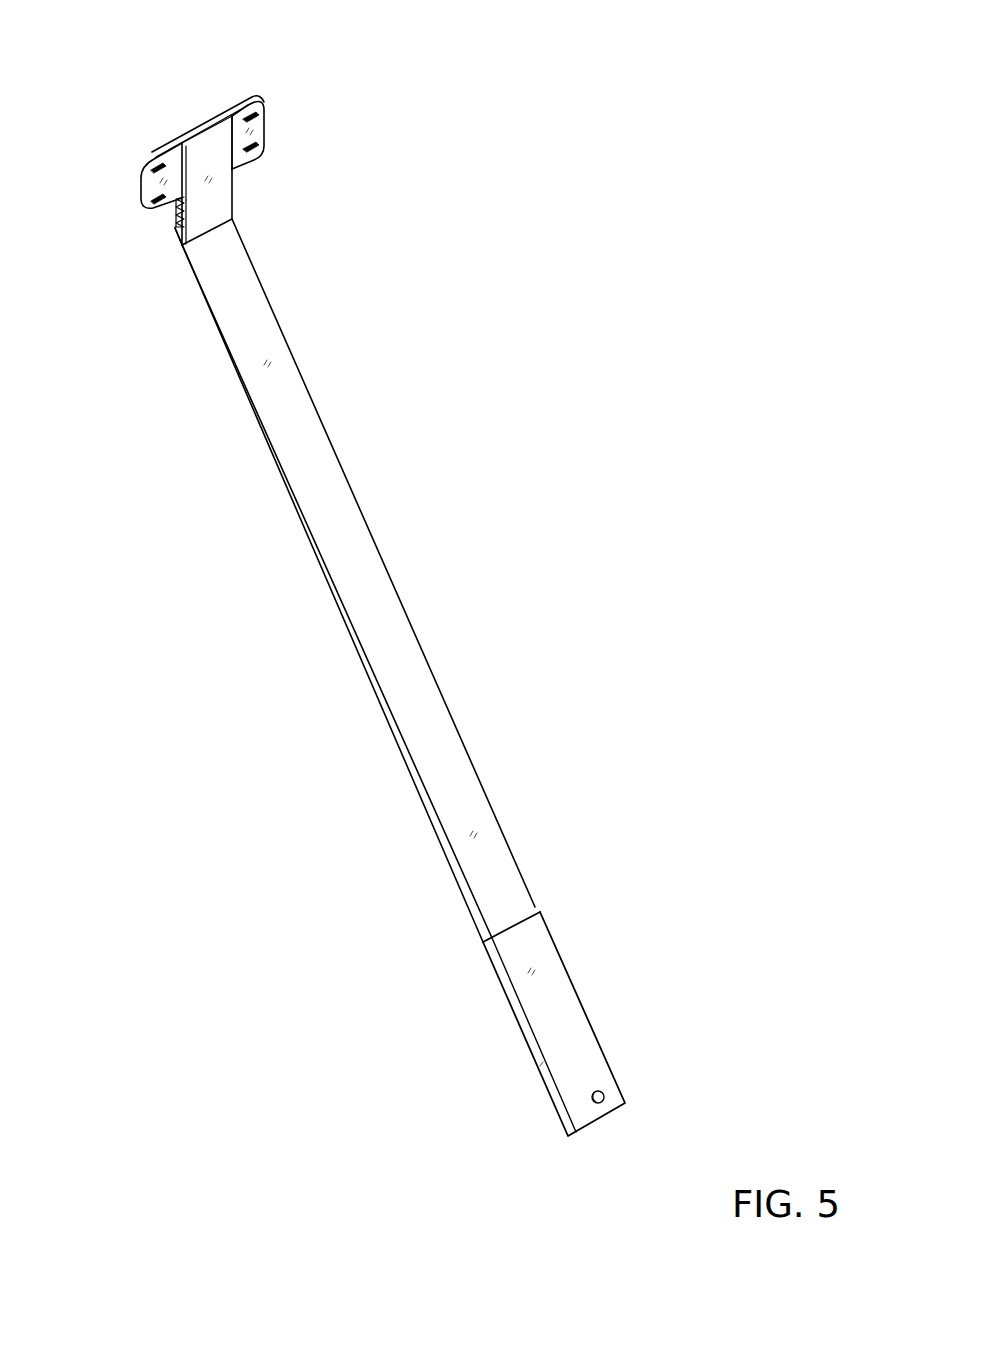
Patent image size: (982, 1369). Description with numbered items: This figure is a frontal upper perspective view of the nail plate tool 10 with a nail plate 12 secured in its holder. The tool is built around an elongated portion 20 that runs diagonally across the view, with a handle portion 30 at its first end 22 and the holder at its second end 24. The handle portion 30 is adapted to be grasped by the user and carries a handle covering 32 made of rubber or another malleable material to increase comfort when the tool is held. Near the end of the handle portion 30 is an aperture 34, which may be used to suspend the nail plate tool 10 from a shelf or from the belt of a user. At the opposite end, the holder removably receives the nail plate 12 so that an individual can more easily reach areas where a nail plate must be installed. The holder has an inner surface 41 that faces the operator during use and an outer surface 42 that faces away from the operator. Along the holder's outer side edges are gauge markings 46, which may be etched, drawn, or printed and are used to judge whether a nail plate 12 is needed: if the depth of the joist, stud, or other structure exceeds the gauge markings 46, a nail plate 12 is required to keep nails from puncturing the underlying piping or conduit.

The nail plate tool 10 is at (589, 176).
The nail plate 12 is at (160, 150).
The elongated portion 20 is at (391, 578).
The first end 22 is at (231, 221).
The second end 24 is at (535, 907).
The handle portion 30 is at (588, 1012).
The handle covering 32 is at (518, 1008).
The aperture 34 is at (604, 1094).
The inner surface 41 is at (212, 145).
The outer surface 42 is at (202, 132).
The gauge markings 46 is at (177, 223).